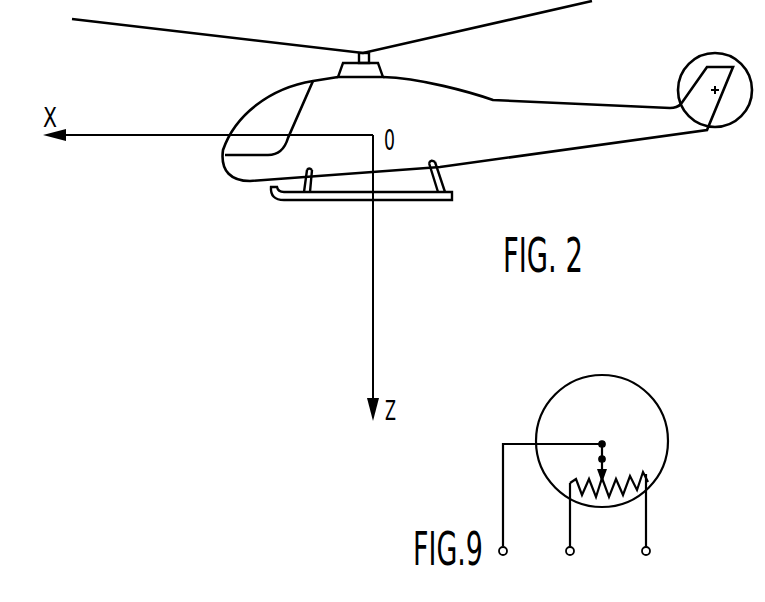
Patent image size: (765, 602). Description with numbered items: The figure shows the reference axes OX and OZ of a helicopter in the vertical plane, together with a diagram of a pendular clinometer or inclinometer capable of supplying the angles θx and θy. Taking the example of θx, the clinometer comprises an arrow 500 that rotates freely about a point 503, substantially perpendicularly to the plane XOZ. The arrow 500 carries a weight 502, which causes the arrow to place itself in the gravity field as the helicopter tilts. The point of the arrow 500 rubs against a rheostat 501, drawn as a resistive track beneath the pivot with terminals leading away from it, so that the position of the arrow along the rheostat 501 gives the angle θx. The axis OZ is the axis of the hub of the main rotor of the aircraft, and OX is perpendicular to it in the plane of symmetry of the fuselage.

The arrow 500 is at (610, 449).
The rheostat 501 is at (612, 497).
The weight 502 is at (607, 459).
The point 503 is at (602, 441).